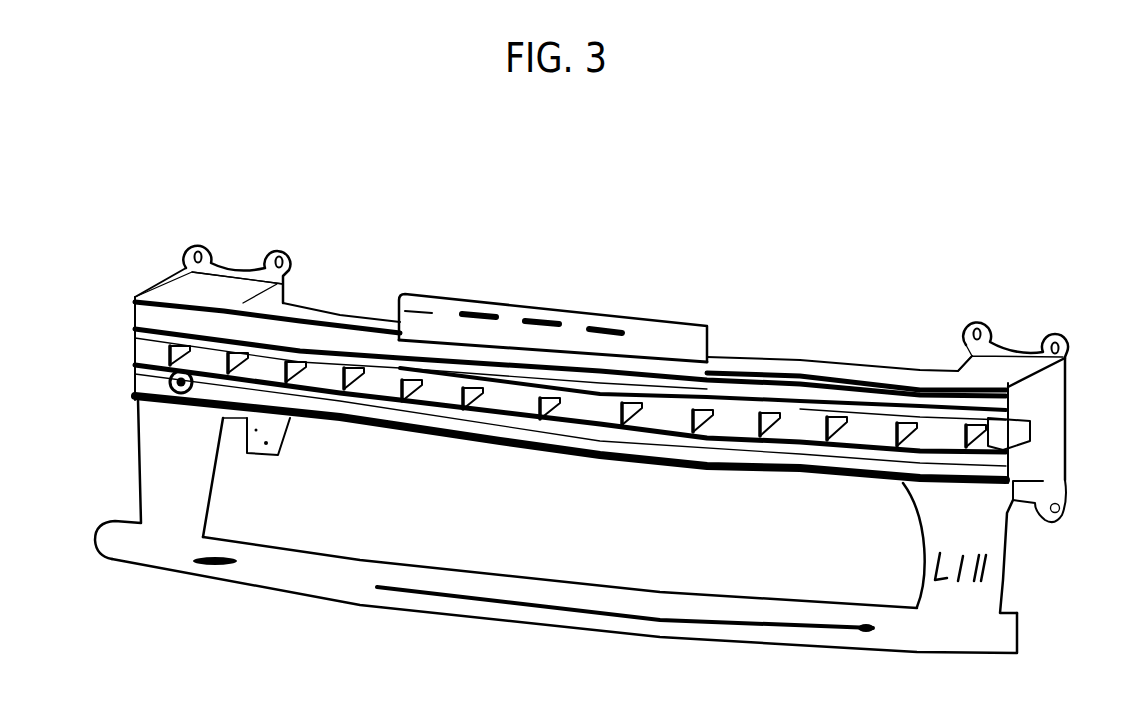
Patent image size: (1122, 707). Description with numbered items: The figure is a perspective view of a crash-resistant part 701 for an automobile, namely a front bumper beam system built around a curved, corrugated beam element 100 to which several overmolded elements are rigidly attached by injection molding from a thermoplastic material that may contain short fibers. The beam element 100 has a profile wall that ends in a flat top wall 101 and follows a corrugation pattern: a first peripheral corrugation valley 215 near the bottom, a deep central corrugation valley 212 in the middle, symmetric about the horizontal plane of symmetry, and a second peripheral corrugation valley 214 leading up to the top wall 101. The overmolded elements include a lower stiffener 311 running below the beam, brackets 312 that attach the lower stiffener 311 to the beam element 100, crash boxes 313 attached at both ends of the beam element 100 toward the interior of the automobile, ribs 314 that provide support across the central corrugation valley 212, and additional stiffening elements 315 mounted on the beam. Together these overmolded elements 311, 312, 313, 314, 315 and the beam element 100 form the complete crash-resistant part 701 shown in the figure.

The beam element 100 is at (776, 359).
The top wall 101 is at (134, 295).
The central corrugation valley 212 is at (128, 345).
The second peripheral corrugation valley 214 is at (128, 304).
The first peripheral corrugation valley 215 is at (118, 373).
The lower stiffener 311 is at (457, 620).
The brackets 312 is at (218, 491).
The crash boxes 313 is at (217, 287).
The ribs 314 is at (457, 392).
The additional stiffening elements 315 is at (582, 303).
The crash-resistant part 701 is at (853, 240).